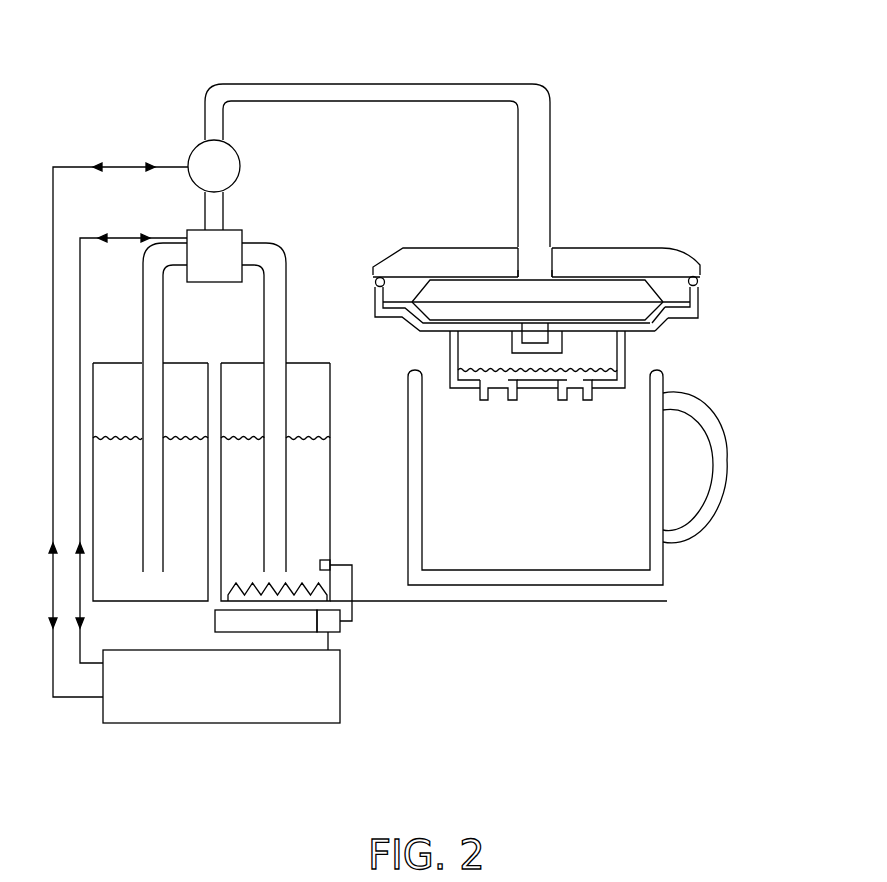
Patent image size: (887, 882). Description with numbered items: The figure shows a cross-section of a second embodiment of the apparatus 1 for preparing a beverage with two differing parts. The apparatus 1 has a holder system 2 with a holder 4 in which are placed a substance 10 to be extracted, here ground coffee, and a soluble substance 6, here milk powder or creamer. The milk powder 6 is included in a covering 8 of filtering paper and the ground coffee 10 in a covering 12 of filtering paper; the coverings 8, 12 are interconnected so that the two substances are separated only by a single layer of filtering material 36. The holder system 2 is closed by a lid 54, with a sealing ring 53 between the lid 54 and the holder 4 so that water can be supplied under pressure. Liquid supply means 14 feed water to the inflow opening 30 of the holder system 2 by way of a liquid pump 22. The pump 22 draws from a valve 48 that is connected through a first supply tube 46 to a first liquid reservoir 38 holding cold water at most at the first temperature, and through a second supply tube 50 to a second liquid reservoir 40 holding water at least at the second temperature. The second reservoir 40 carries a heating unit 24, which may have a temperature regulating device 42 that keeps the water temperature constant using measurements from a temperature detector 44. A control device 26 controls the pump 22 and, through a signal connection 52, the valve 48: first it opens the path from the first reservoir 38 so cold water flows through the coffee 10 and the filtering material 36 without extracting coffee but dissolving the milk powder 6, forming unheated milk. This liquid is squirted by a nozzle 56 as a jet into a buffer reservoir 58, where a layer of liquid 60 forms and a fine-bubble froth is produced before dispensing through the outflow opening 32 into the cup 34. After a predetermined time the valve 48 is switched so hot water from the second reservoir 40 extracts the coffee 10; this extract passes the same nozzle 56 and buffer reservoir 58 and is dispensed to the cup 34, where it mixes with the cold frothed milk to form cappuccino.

The apparatus 1 is at (622, 721).
The holder system 2 is at (405, 236).
The holder 4 is at (700, 303).
The soluble substance 6 is at (668, 318).
The covering 8 is at (657, 331).
The substance to be extracted 10 is at (639, 311).
The covering 12 is at (643, 294).
The liquid supply means 14 is at (293, 74).
The liquid pump 22 is at (190, 150).
The heating unit 24 is at (244, 619).
The control device 26 is at (318, 710).
The inflow opening 30 is at (531, 271).
The outflow opening 32 is at (497, 402).
The cup 34 is at (667, 560).
The layer of filtering material 36 is at (579, 301).
The first liquid reservoir 38 is at (126, 394).
The second liquid reservoir 40 is at (254, 394).
The temperature regulating device 42 is at (329, 621).
The temperature detector 44 is at (327, 563).
The first supply tube 46 is at (150, 326).
The valve 48 is at (230, 272).
The second supply tube 50 is at (276, 316).
The signal connection 52 is at (132, 237).
The sealing ring 53 is at (698, 279).
The lid 54 is at (565, 258).
The nozzle 56 is at (540, 362).
The buffer reservoir 58 is at (450, 360).
The layer of liquid 60 is at (478, 376).